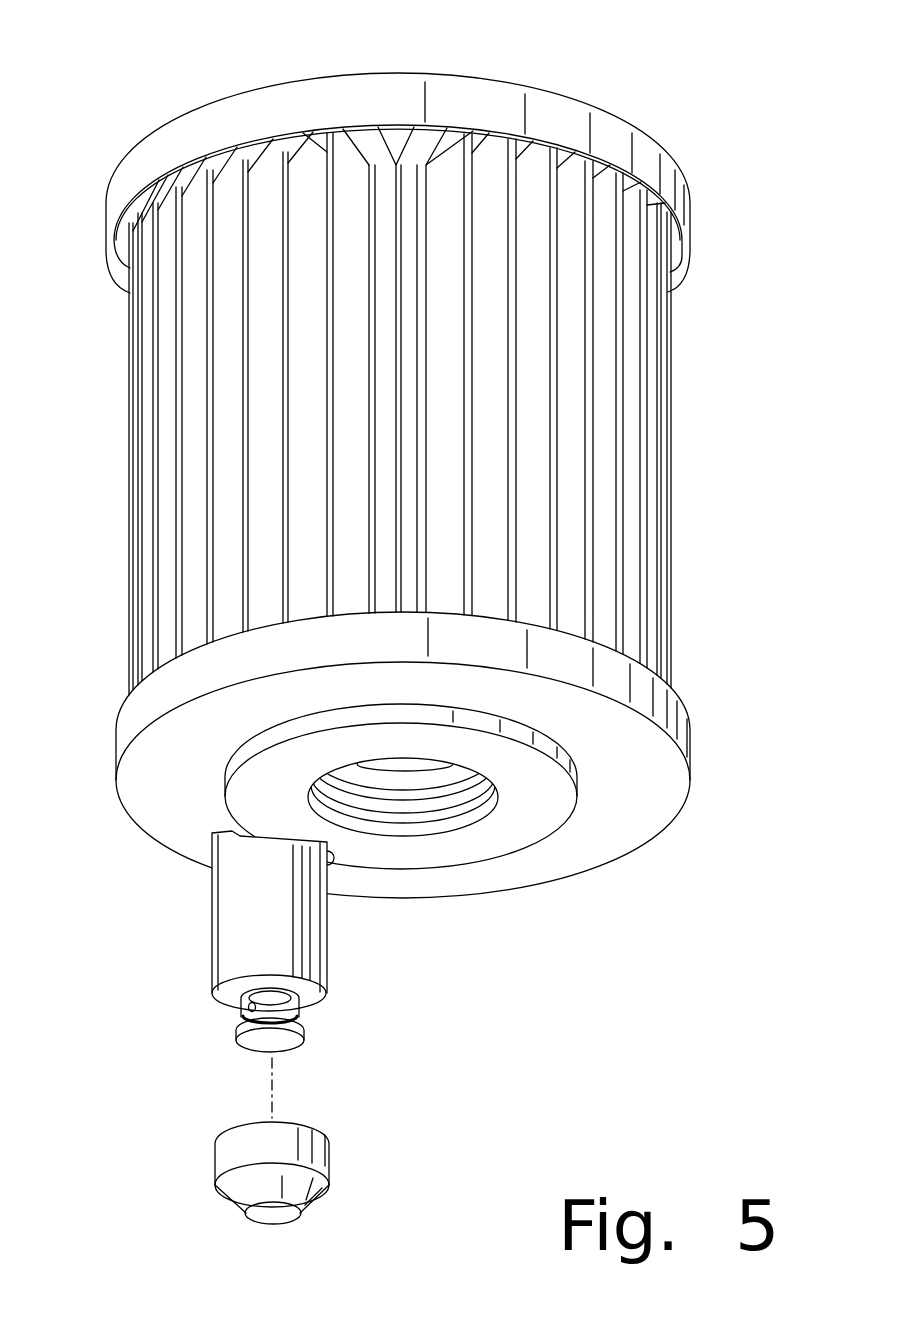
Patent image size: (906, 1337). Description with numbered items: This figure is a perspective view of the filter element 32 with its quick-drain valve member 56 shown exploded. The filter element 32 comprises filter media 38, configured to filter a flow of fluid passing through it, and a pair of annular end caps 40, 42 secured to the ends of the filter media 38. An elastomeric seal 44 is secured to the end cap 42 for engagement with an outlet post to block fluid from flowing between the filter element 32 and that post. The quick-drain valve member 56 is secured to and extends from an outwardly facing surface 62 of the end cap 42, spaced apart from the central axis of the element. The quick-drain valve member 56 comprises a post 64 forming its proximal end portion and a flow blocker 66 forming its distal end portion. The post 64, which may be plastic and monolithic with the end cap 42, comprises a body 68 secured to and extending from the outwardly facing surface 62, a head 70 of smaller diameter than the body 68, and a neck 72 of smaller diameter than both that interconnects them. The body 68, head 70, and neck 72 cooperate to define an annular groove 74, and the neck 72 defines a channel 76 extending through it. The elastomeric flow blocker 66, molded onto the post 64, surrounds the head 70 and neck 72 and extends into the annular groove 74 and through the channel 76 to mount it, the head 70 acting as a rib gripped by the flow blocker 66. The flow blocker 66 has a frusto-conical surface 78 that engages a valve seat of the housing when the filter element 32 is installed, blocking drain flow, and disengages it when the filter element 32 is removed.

The filter element 32 is at (117, 113).
The end cap 40 is at (467, 83).
The filter media 38 is at (641, 446).
The end cap 42 is at (391, 896).
The outwardly facing surface 62 is at (515, 875).
The elastomeric seal 44 is at (551, 803).
The quick-drain valve member 56 is at (340, 989).
The post 64 is at (206, 944).
The body 68 is at (232, 917).
The neck 72 is at (280, 1001).
The channel 76 is at (252, 1003).
The annular groove 74 is at (240, 1018).
The head 70 is at (248, 1052).
The flow blocker 66 is at (236, 1153).
The surface 78 is at (228, 1192).